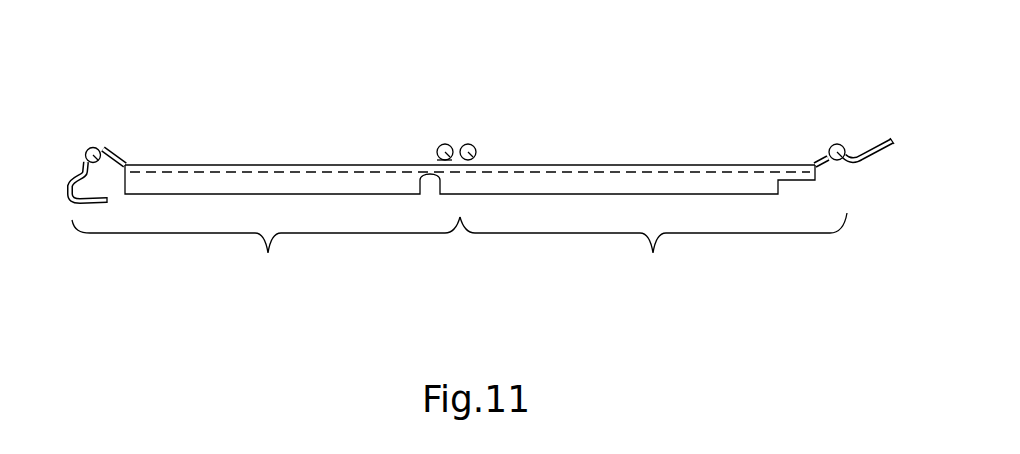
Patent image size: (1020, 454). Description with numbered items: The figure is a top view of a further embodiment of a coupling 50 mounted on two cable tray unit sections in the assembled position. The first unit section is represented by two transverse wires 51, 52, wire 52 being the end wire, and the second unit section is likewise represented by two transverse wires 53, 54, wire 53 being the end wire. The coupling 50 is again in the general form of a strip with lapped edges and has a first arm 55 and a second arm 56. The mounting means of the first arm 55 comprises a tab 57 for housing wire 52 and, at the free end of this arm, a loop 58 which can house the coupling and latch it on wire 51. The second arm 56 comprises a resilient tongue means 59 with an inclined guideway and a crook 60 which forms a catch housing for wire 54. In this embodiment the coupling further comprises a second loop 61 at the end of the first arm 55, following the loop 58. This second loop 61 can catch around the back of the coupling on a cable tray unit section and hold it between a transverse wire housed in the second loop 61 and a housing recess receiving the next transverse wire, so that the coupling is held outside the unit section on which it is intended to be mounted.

The coupling 50 is at (278, 163).
The transverse wire 51 is at (103, 143).
The transverse wire 52 is at (452, 140).
The transverse wire 53 is at (475, 145).
The transverse wire 54 is at (851, 147).
The first arm 55 is at (266, 260).
The second arm 56 is at (653, 256).
The tab 57 is at (440, 142).
The loop 58 is at (91, 147).
The resilient tongue means 59 is at (888, 146).
The crook 60 is at (830, 140).
The second loop 61 is at (68, 203).